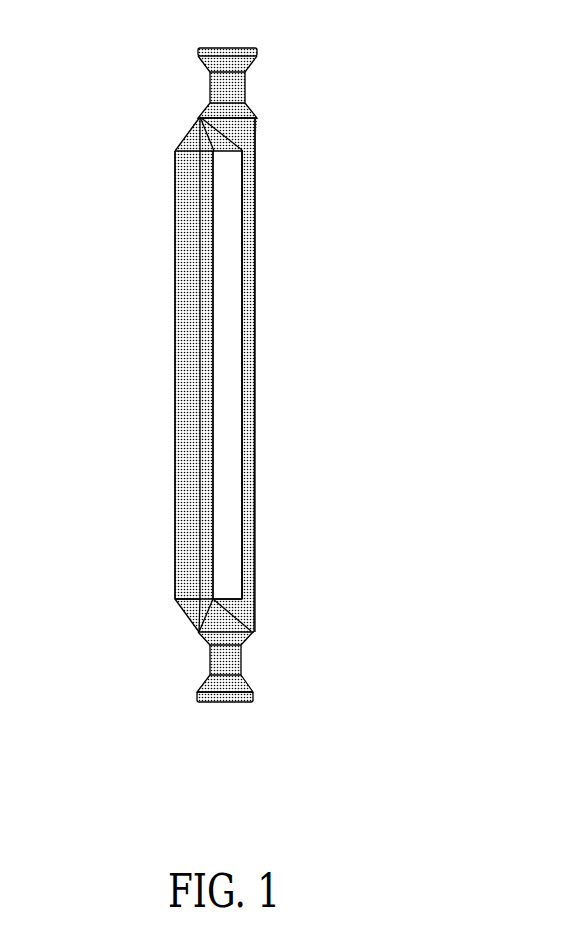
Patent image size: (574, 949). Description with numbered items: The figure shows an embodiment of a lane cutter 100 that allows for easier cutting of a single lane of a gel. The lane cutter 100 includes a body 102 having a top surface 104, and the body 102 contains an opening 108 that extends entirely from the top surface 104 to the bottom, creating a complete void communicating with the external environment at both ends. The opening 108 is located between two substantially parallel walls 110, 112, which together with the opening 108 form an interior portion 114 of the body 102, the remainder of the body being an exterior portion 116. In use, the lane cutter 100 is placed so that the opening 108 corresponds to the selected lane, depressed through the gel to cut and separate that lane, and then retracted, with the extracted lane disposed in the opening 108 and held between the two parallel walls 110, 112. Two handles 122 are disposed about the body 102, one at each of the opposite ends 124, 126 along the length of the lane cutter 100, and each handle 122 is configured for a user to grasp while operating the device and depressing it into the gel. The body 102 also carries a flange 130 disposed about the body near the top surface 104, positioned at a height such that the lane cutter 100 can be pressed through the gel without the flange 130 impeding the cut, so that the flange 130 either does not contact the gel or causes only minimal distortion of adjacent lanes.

The lane cutter 100 is at (242, 384).
The body 102 is at (257, 532).
The top surface 104 is at (177, 129).
The opening 108 is at (230, 260).
The substantially parallel wall 110 is at (241, 389).
The substantially parallel wall 112 is at (217, 432).
The interior portion 114 is at (232, 488).
The exterior portion 116 is at (168, 367).
The handle 122 is at (262, 704).
The end 124 is at (175, 663).
The end 126 is at (150, 84).
The flange 130 is at (182, 243).